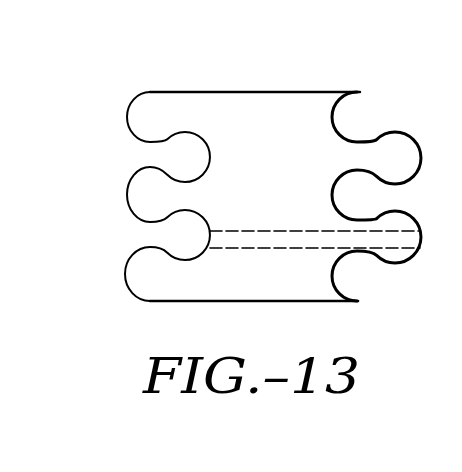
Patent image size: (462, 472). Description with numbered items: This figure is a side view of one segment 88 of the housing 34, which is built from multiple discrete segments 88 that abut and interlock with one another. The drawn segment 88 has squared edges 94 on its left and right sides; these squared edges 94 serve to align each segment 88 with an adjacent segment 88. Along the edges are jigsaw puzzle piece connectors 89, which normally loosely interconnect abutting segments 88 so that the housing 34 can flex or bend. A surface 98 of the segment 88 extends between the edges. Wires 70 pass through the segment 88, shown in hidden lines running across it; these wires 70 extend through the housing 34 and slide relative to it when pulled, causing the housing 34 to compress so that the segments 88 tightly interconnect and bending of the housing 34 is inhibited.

The housing 34 is at (139, 61).
The surface 98 is at (255, 103).
The segment 88 is at (258, 303).
The squared edges 94 is at (127, 195).
The jigsaw puzzle piece connectors 89 is at (398, 148).
The wires 70 is at (260, 230).